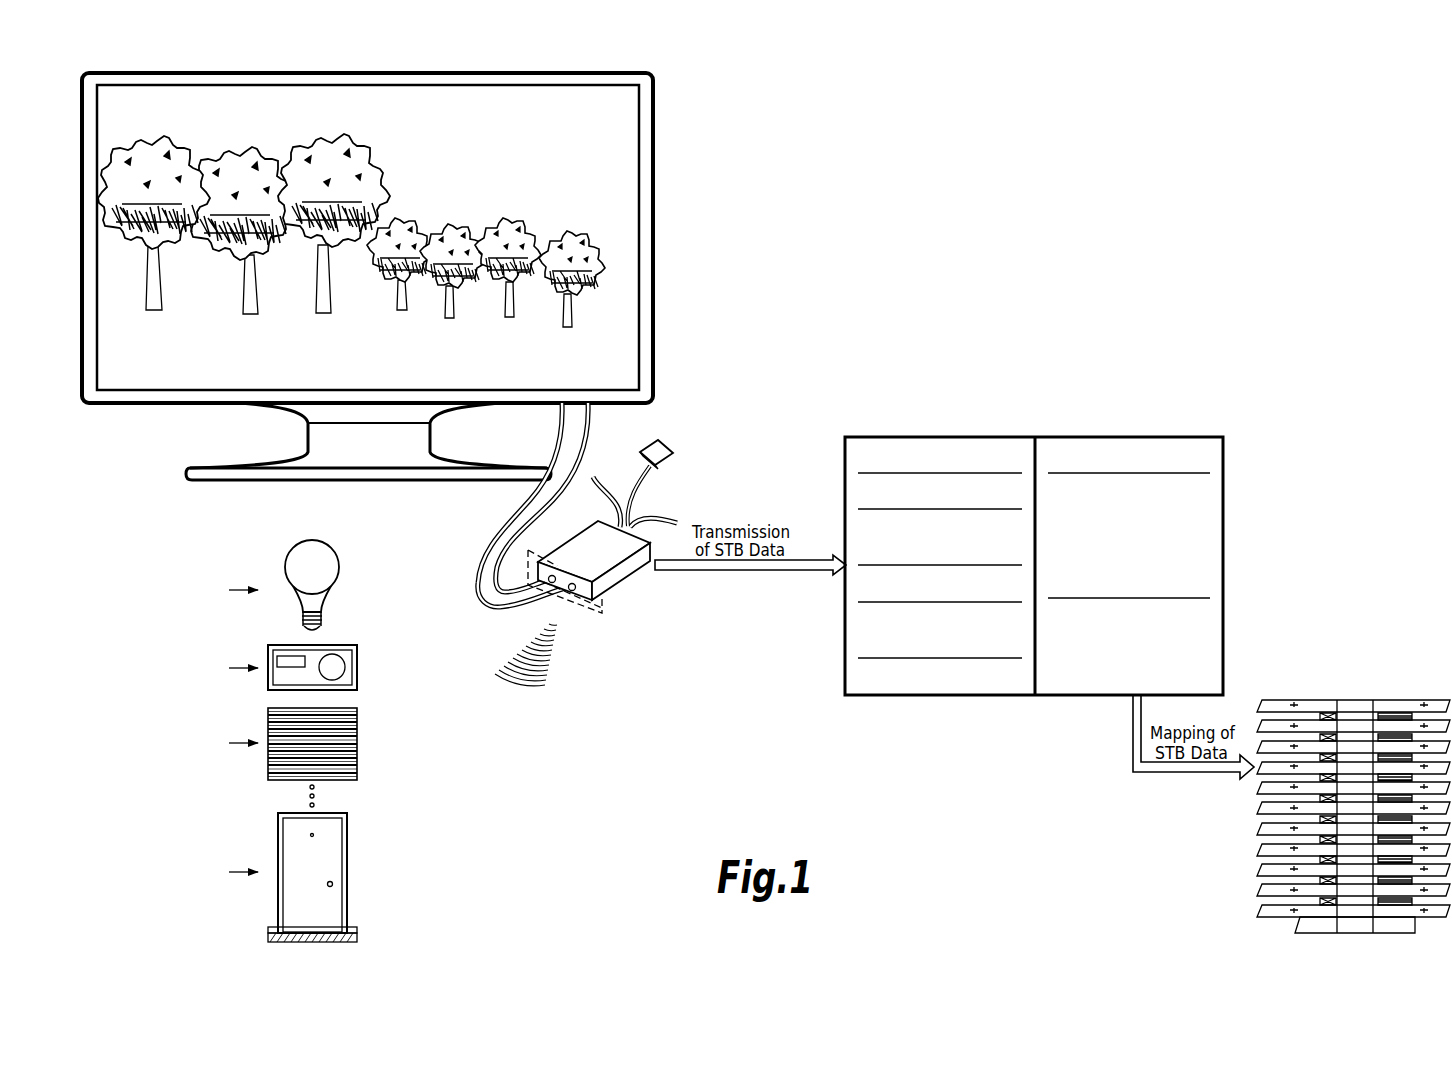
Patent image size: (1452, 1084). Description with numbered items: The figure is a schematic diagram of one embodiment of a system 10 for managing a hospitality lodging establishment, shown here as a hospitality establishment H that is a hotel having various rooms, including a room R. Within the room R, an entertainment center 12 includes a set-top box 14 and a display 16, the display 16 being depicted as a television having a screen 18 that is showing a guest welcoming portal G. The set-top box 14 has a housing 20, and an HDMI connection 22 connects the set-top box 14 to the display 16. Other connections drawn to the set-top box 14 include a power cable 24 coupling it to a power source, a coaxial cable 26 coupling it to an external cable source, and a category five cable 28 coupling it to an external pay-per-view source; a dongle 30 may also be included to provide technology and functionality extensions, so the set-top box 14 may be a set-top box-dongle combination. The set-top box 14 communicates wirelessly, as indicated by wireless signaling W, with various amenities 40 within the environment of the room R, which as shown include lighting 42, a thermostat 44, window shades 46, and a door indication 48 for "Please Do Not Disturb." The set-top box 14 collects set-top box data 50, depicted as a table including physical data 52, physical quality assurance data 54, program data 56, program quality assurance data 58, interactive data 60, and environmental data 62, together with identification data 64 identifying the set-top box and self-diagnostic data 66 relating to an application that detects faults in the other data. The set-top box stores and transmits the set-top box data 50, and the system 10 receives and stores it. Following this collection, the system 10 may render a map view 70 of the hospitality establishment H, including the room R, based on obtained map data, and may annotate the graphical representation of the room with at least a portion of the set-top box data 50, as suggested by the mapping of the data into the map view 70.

The system 10 is at (727, 209).
The hospitality establishment H is at (666, 82).
The room R is at (658, 140).
The display 16 is at (658, 335).
The screen 18 is at (628, 252).
The guest welcoming portal G is at (124, 384).
The entertainment center 12 is at (670, 432).
The dongle 30 is at (674, 448).
The HDMI connection 22 is at (591, 424).
The power cable 24 is at (493, 541).
The category five (Cat 5) cable 28 is at (615, 504).
The coaxial cable 26 is at (668, 520).
The set-top box 14 is at (619, 588).
The housing 20 is at (594, 560).
The wireless signaling W is at (521, 666).
The amenities 40 is at (423, 798).
The lighting 42 is at (340, 569).
The thermostat 44 is at (358, 667).
The window shades 46 is at (358, 743).
The door indication 48 is at (348, 872).
The set-top box data 50 is at (1238, 468).
The physical data 52 is at (852, 674).
The physical quality assurance data 54 is at (852, 627).
The program data 56 is at (852, 582).
The program quality assurance data 58 is at (852, 537).
The interactive data 60 is at (852, 491).
The environmental data 62 is at (852, 454).
The identification data 64 is at (1217, 660).
The self-diagnostic data 66 is at (1217, 543).
The map view 70 is at (1357, 697).